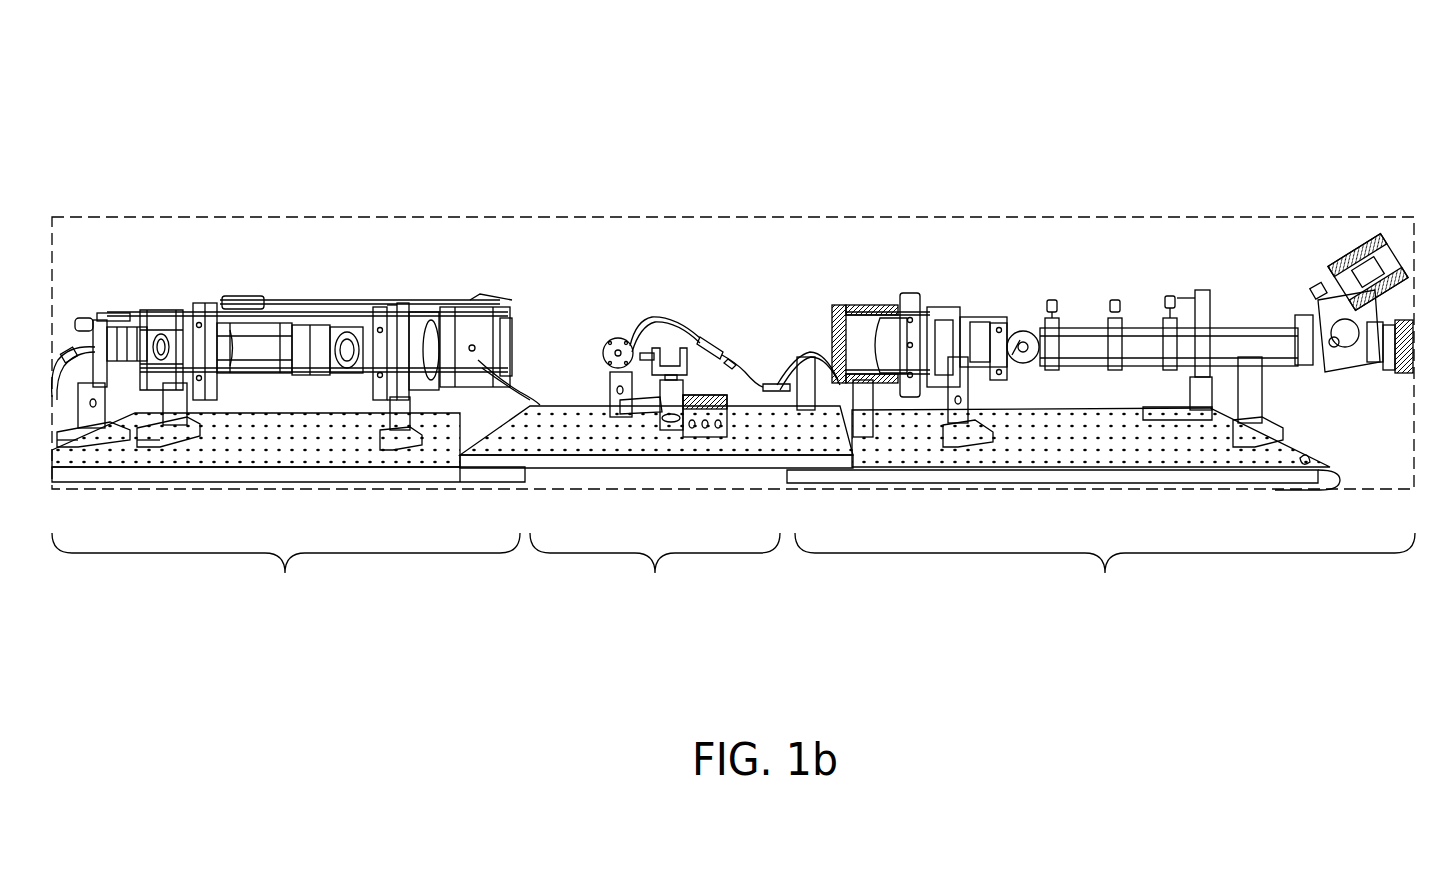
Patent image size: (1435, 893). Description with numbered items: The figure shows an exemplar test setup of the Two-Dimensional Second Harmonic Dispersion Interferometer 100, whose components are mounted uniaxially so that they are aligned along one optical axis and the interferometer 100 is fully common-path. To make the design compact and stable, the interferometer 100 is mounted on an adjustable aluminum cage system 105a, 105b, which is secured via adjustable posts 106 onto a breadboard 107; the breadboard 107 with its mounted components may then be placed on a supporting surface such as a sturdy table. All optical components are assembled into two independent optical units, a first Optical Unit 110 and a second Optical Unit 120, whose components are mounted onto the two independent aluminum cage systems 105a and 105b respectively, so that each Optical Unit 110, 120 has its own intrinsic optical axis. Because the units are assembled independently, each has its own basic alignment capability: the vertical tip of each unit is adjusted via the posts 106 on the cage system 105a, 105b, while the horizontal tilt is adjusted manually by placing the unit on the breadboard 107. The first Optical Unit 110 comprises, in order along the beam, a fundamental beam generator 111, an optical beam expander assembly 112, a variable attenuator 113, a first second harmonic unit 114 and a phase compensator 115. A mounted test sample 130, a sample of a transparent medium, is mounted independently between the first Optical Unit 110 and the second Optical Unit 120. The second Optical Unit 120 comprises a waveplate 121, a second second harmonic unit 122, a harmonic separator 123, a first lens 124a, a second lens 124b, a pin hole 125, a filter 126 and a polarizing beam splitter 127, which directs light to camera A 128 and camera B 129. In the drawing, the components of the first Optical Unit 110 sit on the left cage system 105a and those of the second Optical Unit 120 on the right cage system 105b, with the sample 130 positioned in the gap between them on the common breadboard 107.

The Two-Dimensional Second Harmonic Dispersion Interferometer 100 is at (135, 104).
The aluminum cage system 105a is at (282, 385).
The aluminum cage system 105b is at (1210, 400).
The adjustable posts 106 is at (93, 435).
The breadboard 107 is at (1270, 458).
The Optical Unit #1 110 is at (286, 570).
The fundamental beam generator 111 is at (125, 284).
The optical beam expander assembly 112 is at (246, 254).
The variable attenuator 113 is at (342, 310).
The second harmonic unit 1 114 is at (419, 266).
The phase compensator 115 is at (481, 277).
The Optical Unit #2 120 is at (1105, 570).
The waveplate 121 is at (822, 283).
The second harmonic unit 2 122 is at (891, 272).
The harmonic separator 123 is at (969, 290).
The lens 1 124a is at (1043, 275).
The lens 2 124b is at (1169, 271).
The pin hole 125 is at (1107, 276).
The filter 126 is at (1270, 291).
The polarizing beam splitter 127 is at (1298, 285).
The camera A 128 is at (1394, 414).
The camera B 129 is at (1339, 218).
The mounted test sample 130 is at (685, 462).